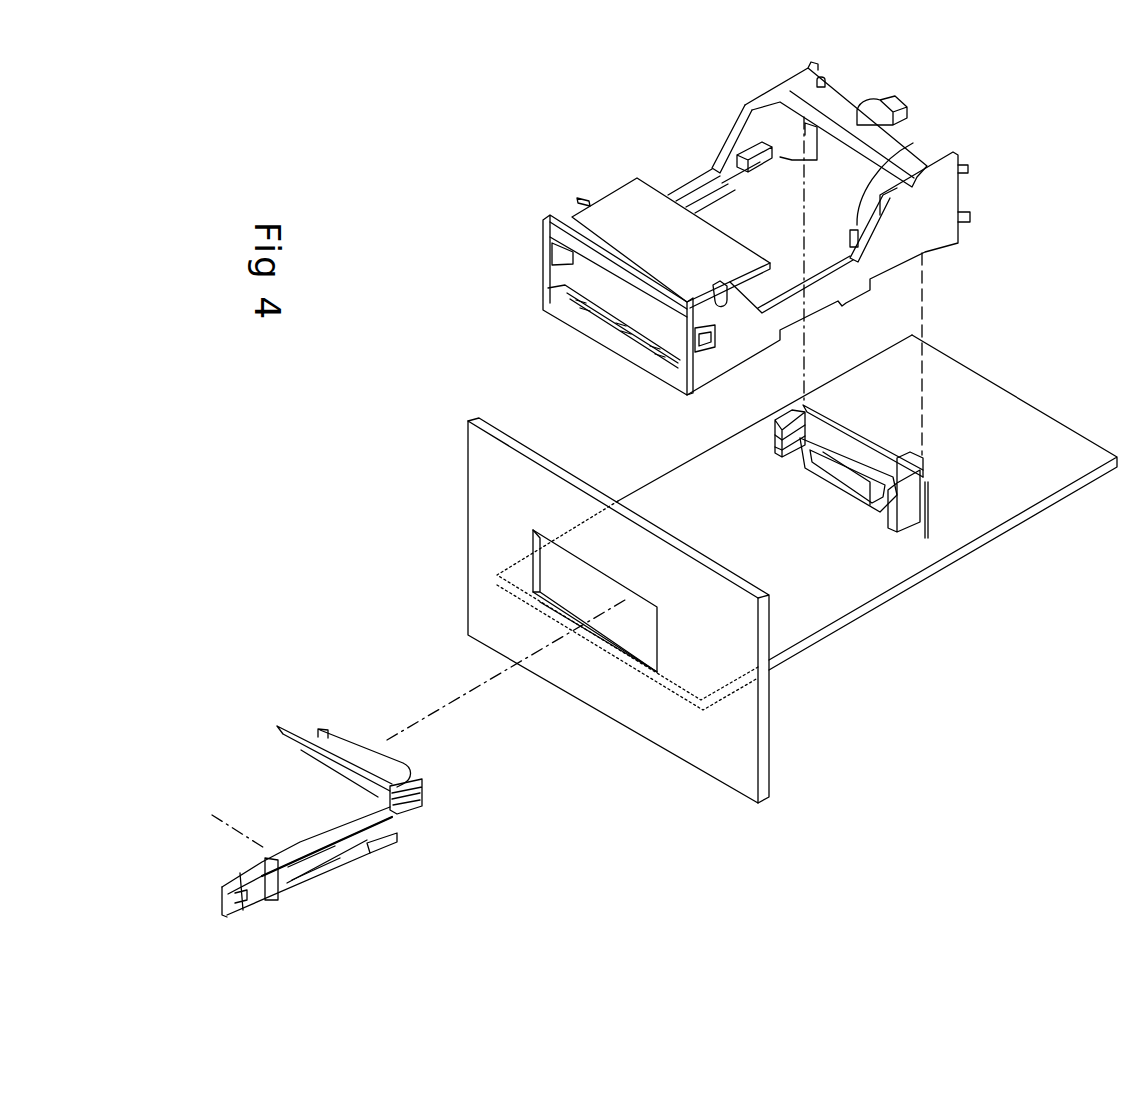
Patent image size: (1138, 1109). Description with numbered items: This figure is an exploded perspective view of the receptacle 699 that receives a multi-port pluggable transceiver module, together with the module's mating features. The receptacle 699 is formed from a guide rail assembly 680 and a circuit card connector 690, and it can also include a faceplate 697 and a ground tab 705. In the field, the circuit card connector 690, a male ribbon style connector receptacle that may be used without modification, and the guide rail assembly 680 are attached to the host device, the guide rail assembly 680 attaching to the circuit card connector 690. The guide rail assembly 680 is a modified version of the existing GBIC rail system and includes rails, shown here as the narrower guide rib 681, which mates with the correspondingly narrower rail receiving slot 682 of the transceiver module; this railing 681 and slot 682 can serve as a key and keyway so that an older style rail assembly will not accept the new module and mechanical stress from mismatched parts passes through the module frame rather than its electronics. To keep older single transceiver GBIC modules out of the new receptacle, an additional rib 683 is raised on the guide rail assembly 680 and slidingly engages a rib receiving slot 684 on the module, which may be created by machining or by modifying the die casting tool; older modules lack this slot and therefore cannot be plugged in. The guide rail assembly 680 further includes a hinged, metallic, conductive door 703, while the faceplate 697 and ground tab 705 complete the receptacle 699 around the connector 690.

The guide rail assembly 680 is at (785, 36).
The guide rib 681 is at (722, 170).
The slot 682 is at (400, 830).
The rib 683 is at (757, 147).
The rib receiving slot 684 is at (390, 817).
The circuit card connector 690 is at (878, 510).
The faceplate 697 is at (763, 773).
The receptacle 699 is at (1000, 368).
The hinged, metallic, conductive door 703 is at (627, 178).
The ground tab 705 is at (567, 300).